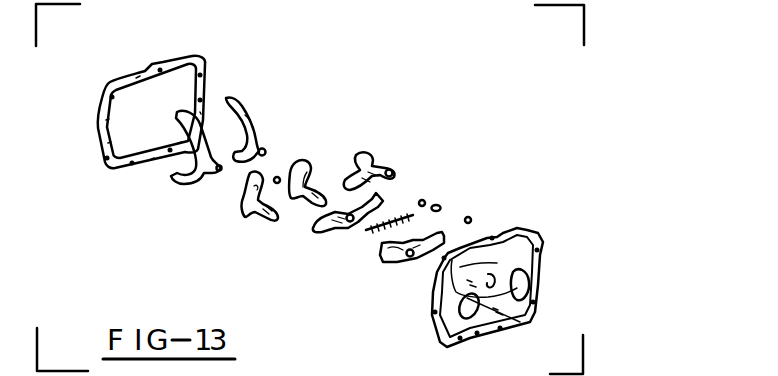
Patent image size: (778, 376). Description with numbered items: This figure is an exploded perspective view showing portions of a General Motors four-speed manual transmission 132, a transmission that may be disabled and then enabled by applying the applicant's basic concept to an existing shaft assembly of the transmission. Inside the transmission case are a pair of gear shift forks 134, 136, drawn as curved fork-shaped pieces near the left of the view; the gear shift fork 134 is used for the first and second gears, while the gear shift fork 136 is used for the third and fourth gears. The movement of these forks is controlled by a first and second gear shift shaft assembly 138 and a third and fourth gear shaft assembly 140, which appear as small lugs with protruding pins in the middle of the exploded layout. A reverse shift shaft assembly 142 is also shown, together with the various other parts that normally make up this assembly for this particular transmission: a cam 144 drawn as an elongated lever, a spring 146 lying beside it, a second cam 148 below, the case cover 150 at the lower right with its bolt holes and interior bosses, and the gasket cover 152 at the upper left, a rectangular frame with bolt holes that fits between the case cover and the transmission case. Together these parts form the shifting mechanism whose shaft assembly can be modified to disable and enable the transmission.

The four-speed manual transmission 132 is at (390, 103).
The gear shift fork 134 is at (250, 109).
The gear shift fork 136 is at (168, 178).
The first and second gear shift shaft assembly 138 is at (298, 162).
The third and fourth gear shaft assembly 140 is at (252, 223).
The reverse shift shaft assembly 142 is at (381, 158).
The cam 144 is at (383, 203).
The spring 146 is at (366, 232).
The cam 148 is at (392, 262).
The case cover 150 is at (536, 228).
The gasket cover 152 is at (202, 50).